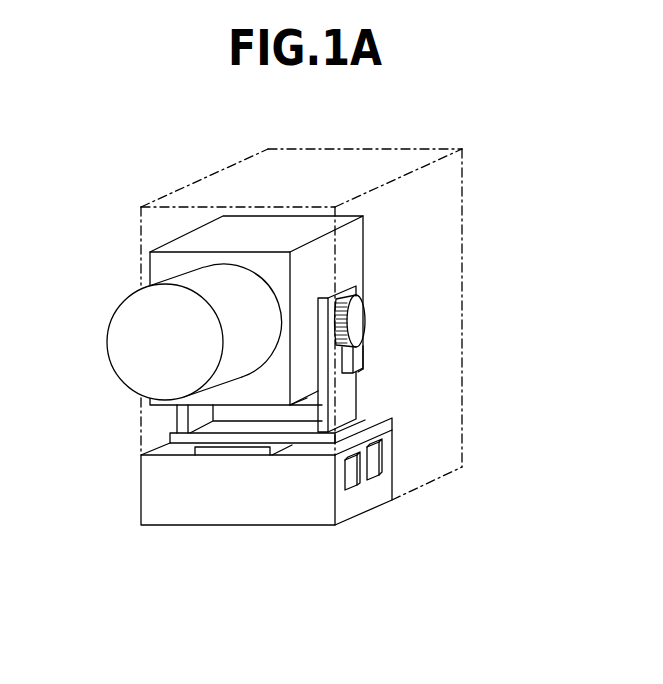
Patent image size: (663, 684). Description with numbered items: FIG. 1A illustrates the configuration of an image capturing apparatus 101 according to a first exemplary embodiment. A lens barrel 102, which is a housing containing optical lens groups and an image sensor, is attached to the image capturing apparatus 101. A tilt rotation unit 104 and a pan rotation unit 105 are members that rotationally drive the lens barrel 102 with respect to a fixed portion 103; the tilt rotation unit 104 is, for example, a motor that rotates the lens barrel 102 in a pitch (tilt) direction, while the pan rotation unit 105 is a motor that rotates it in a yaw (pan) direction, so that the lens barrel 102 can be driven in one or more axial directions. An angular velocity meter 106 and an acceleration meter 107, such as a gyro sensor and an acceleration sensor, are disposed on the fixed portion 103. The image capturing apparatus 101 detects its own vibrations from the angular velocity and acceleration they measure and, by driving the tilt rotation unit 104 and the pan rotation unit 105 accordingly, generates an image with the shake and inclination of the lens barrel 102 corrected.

The image capturing apparatus 101 is at (392, 148).
The lens barrel 102 is at (187, 230).
The fixed portion 103 is at (141, 490).
The tilt rotation unit 104 is at (365, 344).
The pan rotation unit 105 is at (238, 455).
The angular velocity meter 106 is at (378, 479).
The acceleration meter 107 is at (358, 490).